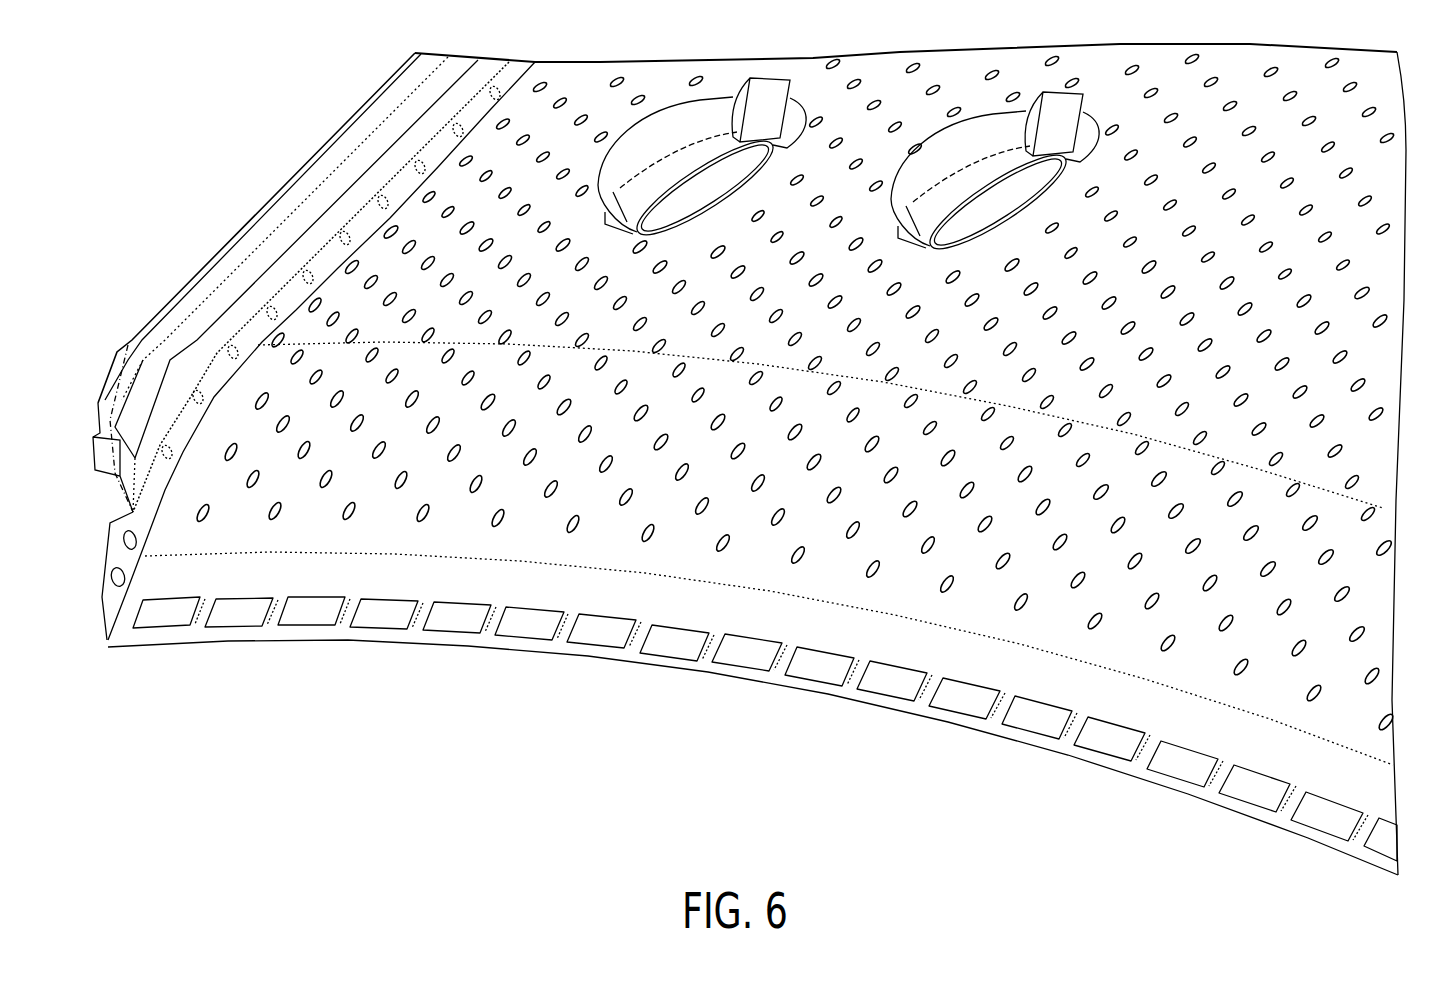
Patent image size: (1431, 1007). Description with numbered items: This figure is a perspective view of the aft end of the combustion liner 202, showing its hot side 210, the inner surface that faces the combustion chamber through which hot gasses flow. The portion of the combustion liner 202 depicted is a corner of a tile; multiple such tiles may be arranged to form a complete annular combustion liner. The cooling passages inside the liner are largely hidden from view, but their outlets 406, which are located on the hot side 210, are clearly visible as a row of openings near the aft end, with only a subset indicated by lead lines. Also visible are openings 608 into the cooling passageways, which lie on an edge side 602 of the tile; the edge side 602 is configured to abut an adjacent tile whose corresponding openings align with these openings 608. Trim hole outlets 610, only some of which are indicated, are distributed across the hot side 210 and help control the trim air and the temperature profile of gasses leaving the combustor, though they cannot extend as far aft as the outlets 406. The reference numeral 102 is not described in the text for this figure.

The combustor liner panel 102 is at (590, 772).
The combustion liner 202 is at (113, 523).
The hot side 210 is at (1346, 524).
The outlets 406 is at (240, 626).
The edge side 602 is at (240, 329).
The openings 608 is at (126, 545).
The trim hole outlets 610 is at (624, 503).